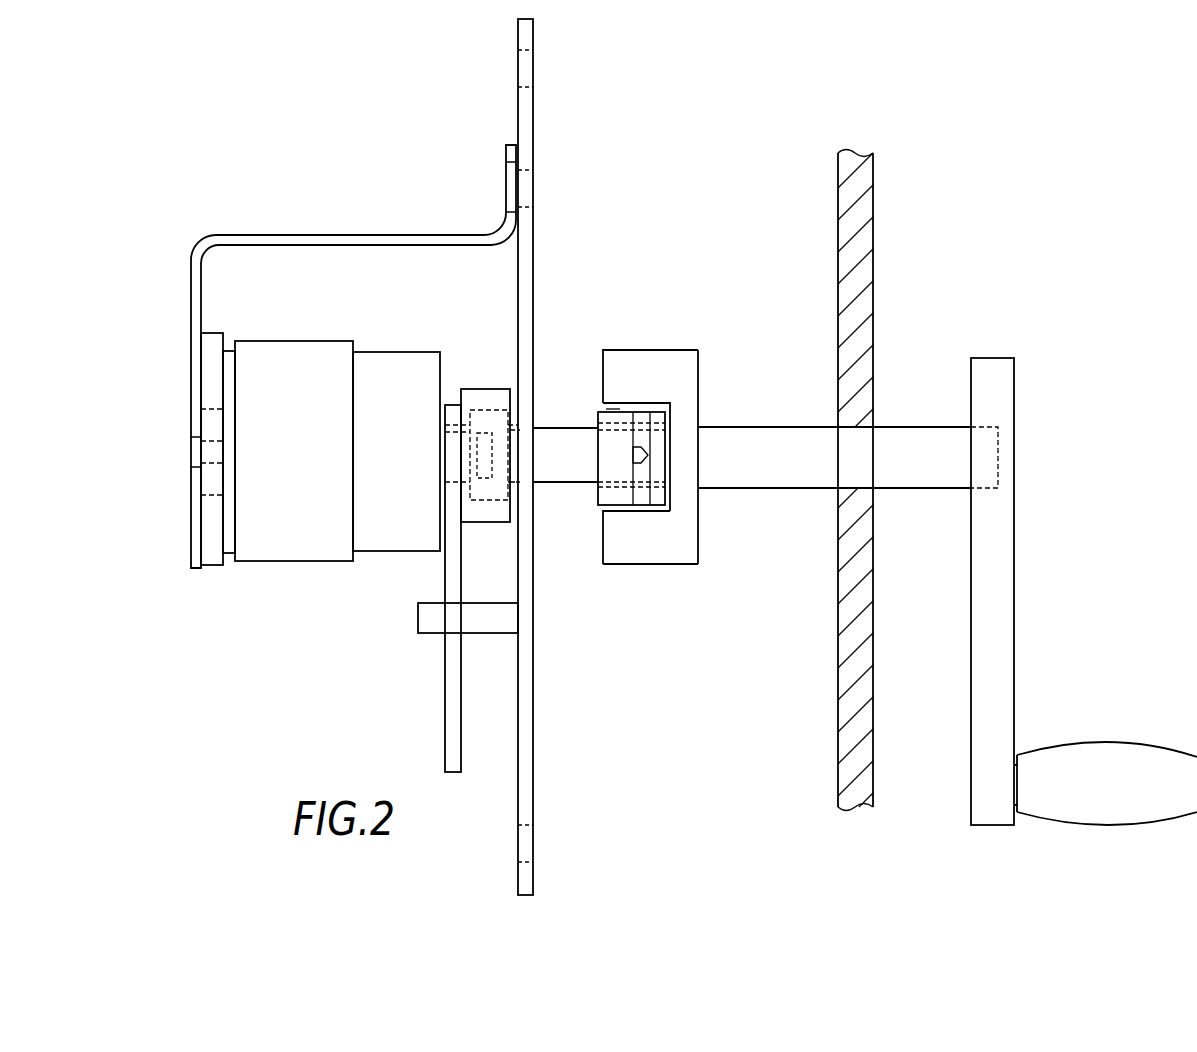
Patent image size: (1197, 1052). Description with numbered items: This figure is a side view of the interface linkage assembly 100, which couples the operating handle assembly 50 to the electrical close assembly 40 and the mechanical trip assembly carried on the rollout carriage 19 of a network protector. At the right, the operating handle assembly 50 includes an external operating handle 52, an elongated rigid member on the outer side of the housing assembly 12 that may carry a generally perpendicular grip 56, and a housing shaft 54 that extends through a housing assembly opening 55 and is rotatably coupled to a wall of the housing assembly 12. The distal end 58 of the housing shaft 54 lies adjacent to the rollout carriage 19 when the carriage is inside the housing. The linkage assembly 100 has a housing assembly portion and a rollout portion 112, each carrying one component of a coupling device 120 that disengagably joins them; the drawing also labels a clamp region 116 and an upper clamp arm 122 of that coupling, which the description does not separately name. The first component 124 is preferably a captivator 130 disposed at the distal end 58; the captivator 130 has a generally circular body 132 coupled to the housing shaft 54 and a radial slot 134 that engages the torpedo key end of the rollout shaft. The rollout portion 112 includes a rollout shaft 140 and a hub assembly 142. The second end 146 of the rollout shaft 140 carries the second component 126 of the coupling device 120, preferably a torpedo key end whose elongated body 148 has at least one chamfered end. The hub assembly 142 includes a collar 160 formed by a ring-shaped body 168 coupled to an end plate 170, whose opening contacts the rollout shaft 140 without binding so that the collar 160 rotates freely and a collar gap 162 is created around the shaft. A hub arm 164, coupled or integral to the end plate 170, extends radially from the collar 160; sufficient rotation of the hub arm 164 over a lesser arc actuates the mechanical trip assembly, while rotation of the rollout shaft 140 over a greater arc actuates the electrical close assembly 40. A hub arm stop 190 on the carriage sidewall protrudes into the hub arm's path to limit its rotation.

The interface linkage assembly 100 is at (270, 120).
The rollout portion 112 is at (404, 145).
The rollout carriage 19 is at (533, 783).
The electrical close assembly 40 is at (286, 565).
The hub assembly 142 is at (478, 325).
The hub arm 164 is at (445, 668).
The hub arm stop 190 is at (418, 618).
The collar 160 is at (468, 395).
The ring-shaped body 168 is at (498, 395).
The end plate 170 is at (463, 404).
The collar gap 162 is at (470, 490).
The rollout shaft 140 is at (562, 485).
The clamp assembly 116 is at (664, 244).
The coupling device 120 is at (659, 650).
The upper clamp arm 122 is at (680, 350).
The first component 124 is at (698, 538).
The captivator 130 is at (612, 595).
The circular body 132 is at (682, 555).
The radial slot 134 is at (617, 408).
The second component 126 is at (600, 410).
The second end 146 is at (598, 455).
The elongated body 148 is at (642, 418).
The distal end 58 is at (718, 475).
The housing assembly opening 55 is at (873, 425).
The housing shaft 54 is at (898, 488).
The housing assembly 12 is at (873, 278).
The operating handle assembly 50 is at (1000, 320).
The operating handle 52 is at (1003, 568).
The grip 56 is at (1117, 750).